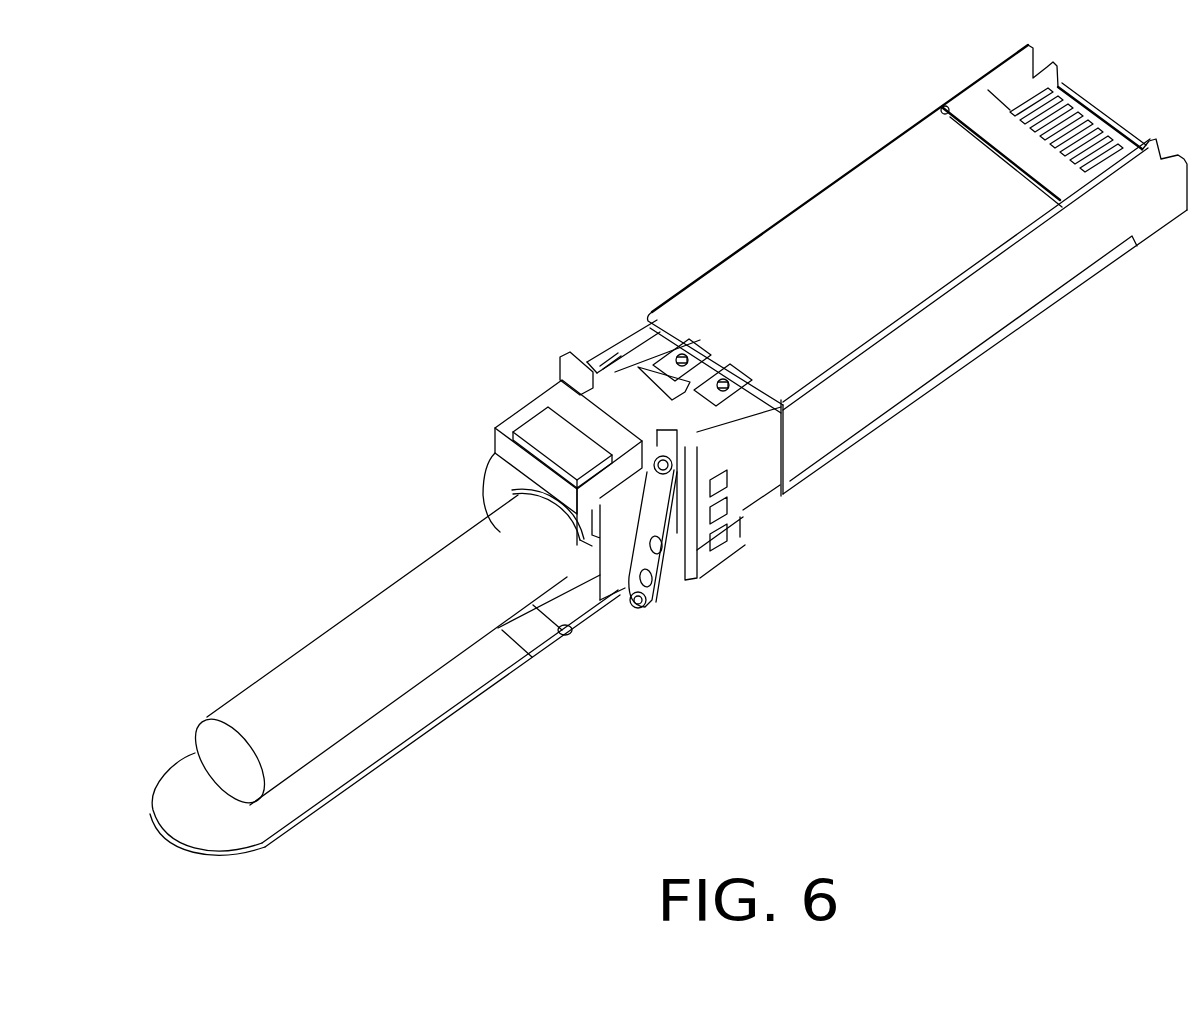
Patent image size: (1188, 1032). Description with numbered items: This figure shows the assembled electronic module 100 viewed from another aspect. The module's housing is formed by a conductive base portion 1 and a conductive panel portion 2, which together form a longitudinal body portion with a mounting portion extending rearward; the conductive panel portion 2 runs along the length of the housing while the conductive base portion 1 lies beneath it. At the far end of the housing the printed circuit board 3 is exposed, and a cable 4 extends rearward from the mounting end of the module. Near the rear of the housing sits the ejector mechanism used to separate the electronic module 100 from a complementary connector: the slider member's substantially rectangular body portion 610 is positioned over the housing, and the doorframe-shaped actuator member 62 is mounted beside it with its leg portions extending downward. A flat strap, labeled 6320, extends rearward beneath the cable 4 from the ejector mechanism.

The conductive base portion 1 is at (793, 260).
The conductive panel portion 2 is at (960, 367).
The printed circuit board 3 is at (1015, 143).
The cable 4 is at (387, 637).
The actuator member 62 is at (658, 560).
The electronic module 100 is at (577, 312).
The body portion 610 is at (573, 430).
The pull strap 6320 is at (440, 722).